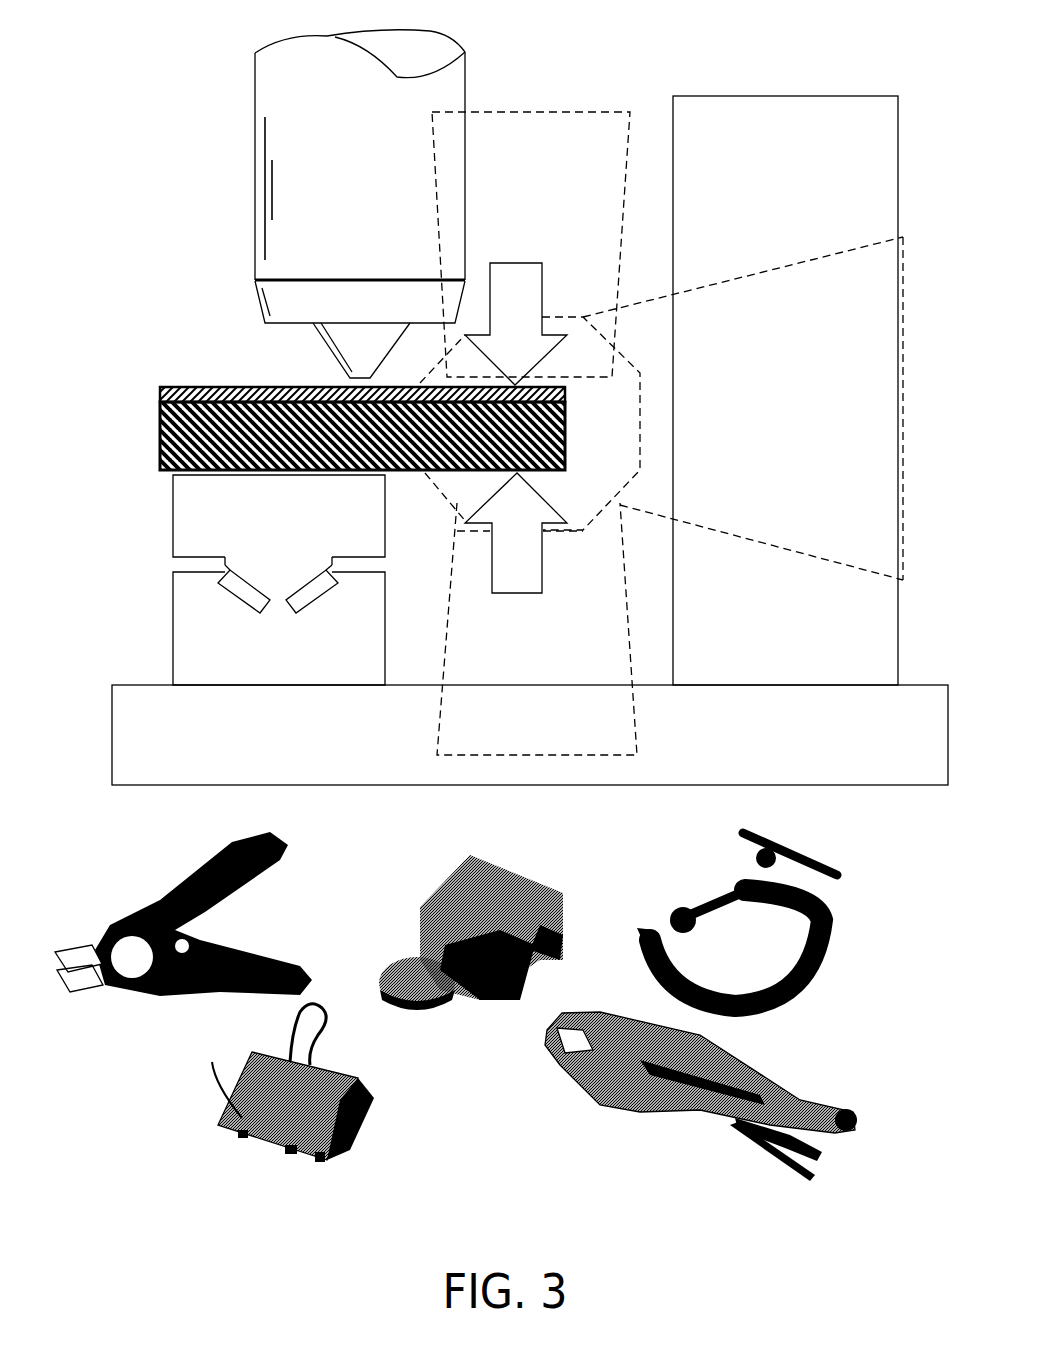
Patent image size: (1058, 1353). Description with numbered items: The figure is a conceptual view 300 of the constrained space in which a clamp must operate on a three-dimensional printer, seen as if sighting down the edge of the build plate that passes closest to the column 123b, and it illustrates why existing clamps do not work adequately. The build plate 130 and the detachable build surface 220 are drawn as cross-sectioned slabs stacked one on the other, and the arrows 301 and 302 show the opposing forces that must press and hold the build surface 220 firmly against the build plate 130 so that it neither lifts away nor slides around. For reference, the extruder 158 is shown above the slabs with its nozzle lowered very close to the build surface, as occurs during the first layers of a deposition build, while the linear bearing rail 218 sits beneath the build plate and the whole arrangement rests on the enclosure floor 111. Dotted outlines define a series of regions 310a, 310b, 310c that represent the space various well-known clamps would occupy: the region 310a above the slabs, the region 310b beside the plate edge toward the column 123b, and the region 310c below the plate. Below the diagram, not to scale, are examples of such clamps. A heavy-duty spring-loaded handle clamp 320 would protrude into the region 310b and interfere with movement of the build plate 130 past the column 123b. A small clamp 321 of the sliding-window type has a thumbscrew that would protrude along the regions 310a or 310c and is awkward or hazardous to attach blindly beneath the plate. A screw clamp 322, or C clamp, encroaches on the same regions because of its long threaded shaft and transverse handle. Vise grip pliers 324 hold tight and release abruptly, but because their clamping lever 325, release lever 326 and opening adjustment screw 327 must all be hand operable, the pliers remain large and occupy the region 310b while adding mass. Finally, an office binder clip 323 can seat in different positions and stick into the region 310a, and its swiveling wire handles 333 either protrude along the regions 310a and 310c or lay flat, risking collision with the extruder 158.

The conceptual view 300 is at (643, 30).
The extruder 158 is at (255, 90).
The build surface 220 is at (218, 386).
The build plate 130 is at (160, 437).
The linear bearing rail 218 is at (173, 616).
The enclosure floor 111 is at (320, 751).
The column 123b is at (857, 159).
The region 310a is at (570, 160).
The region 310b is at (785, 376).
The region 310c is at (565, 662).
The arrow 301 is at (497, 357).
The arrow 302 is at (496, 520).
The spring-loaded handle clamp 320 is at (130, 900).
The small clamp 321 is at (425, 902).
The screw clamp 322 is at (700, 900).
The binder clip 323 is at (235, 1066).
The wire handles 333 is at (338, 1018).
The vise grip pliers 324 is at (562, 1068).
The clamping lever 325 is at (813, 1170).
The release lever 326 is at (827, 1150).
The opening adjustment screw 327 is at (853, 1118).